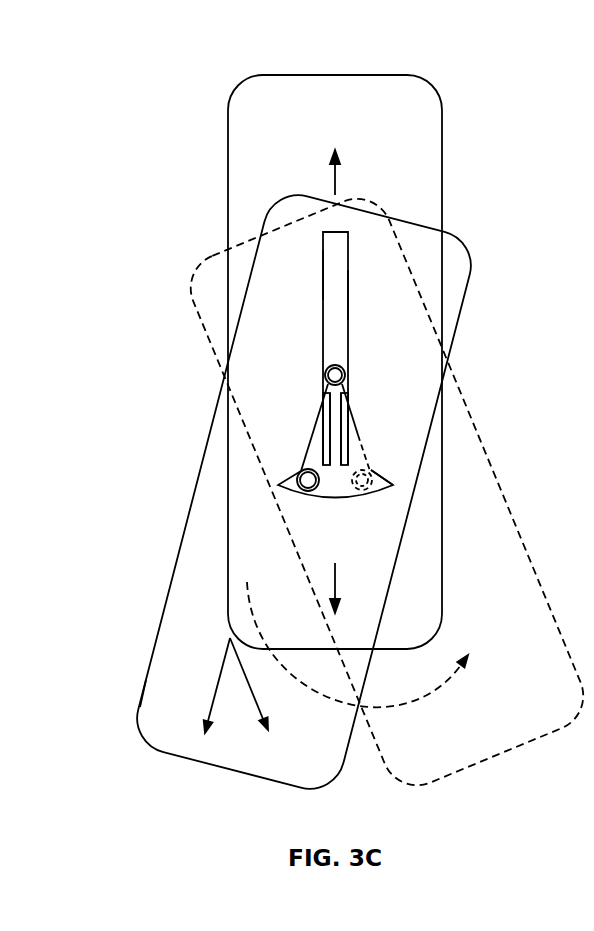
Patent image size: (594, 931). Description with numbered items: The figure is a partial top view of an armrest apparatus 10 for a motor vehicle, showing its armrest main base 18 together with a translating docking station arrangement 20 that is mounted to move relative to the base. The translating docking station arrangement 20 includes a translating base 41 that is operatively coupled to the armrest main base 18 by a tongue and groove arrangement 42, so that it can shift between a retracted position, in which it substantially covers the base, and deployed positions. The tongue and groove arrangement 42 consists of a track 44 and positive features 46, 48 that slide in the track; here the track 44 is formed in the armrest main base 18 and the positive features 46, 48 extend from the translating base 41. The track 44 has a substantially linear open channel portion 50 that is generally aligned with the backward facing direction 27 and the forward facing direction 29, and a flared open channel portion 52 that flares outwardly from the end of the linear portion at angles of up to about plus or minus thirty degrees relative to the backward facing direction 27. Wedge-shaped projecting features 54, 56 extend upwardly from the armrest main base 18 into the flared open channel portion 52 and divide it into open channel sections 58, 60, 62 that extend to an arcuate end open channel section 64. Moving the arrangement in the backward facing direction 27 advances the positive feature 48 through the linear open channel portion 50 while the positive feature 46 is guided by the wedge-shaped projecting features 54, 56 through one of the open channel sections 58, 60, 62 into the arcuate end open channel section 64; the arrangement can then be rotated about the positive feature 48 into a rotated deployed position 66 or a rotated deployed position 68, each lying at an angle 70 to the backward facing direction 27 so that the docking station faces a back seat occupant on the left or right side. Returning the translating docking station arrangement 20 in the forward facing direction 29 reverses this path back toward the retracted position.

The armrest apparatus 10 is at (461, 89).
The armrest main base 18 is at (312, 74).
The translating docking station arrangement 20 is at (142, 735).
The backward facing direction 27 is at (338, 580).
The forward facing direction 29 is at (338, 178).
The translating base 41 is at (140, 708).
The tongue and groove arrangement 42 is at (322, 284).
The track 44 is at (349, 300).
The positive feature 46 is at (310, 491).
The positive feature 48 is at (327, 369).
The substantially linear open channel portion 50 is at (339, 257).
The flared open channel portion 52 is at (364, 464).
The wedge-shaped projecting feature 54 is at (327, 455).
The wedge-shaped projecting feature 56 is at (343, 418).
The open channel section 58 is at (318, 432).
The open channel section 60 is at (338, 405).
The open channel section 62 is at (352, 438).
The arcuate end open channel section 64 is at (380, 492).
The rotated deployed position 66 is at (180, 742).
The rotated deployed position 68 is at (462, 773).
The angle 70 is at (243, 670).